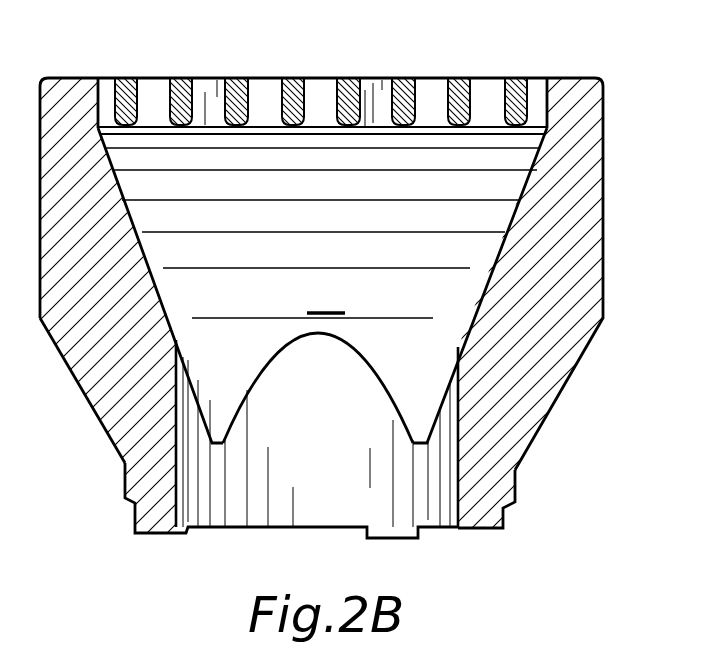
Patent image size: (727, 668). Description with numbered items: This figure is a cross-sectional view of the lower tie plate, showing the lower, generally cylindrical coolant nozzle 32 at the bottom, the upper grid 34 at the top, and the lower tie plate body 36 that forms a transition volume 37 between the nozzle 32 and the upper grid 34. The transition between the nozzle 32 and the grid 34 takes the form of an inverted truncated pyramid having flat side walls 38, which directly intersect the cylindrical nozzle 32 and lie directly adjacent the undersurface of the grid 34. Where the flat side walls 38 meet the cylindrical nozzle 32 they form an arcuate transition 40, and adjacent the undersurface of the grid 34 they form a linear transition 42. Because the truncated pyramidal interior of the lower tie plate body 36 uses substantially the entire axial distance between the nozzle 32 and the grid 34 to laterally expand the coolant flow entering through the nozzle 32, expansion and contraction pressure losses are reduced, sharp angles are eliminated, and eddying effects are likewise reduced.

The coolant nozzle 32 is at (520, 474).
The upper grid 34 is at (186, 79).
The lower tie plate body 36 is at (568, 193).
The transition volume 37 is at (326, 299).
The flat side walls 38 is at (170, 320).
The arcuate transition 40 is at (347, 340).
The linear transition 42 is at (431, 127).